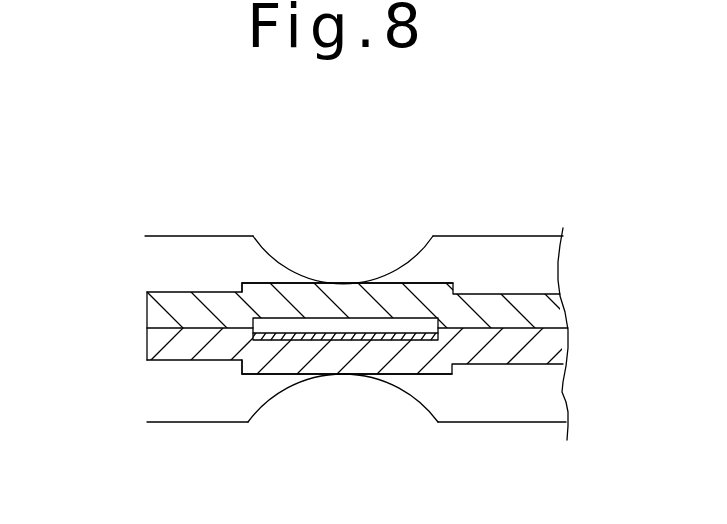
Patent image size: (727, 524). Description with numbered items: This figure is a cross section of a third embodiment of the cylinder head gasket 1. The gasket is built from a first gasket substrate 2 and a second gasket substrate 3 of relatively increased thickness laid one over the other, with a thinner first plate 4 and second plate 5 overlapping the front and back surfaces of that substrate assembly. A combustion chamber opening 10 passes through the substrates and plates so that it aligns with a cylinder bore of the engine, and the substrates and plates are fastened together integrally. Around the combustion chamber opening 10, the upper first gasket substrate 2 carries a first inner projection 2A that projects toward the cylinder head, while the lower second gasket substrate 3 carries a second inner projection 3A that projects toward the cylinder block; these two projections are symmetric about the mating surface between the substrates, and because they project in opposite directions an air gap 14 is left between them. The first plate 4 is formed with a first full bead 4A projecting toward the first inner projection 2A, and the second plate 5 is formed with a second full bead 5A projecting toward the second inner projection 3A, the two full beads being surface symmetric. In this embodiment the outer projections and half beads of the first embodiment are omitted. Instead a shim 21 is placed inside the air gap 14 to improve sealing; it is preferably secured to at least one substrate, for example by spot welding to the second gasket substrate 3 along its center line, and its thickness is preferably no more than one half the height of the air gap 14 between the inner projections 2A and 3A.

The cylinder head gasket 1 is at (531, 228).
The first gasket substrate 2 is at (547, 310).
The second gasket substrate 3 is at (542, 348).
The first inner projection 2A is at (425, 283).
The second inner projection 3A is at (427, 375).
The first plate 4 is at (465, 236).
The second plate 5 is at (527, 423).
The first full bead 4A is at (297, 268).
The second full bead 5A is at (300, 385).
The combustion chamber opening 10 is at (147, 345).
The air gap 14 is at (268, 321).
The shim 21 is at (267, 338).